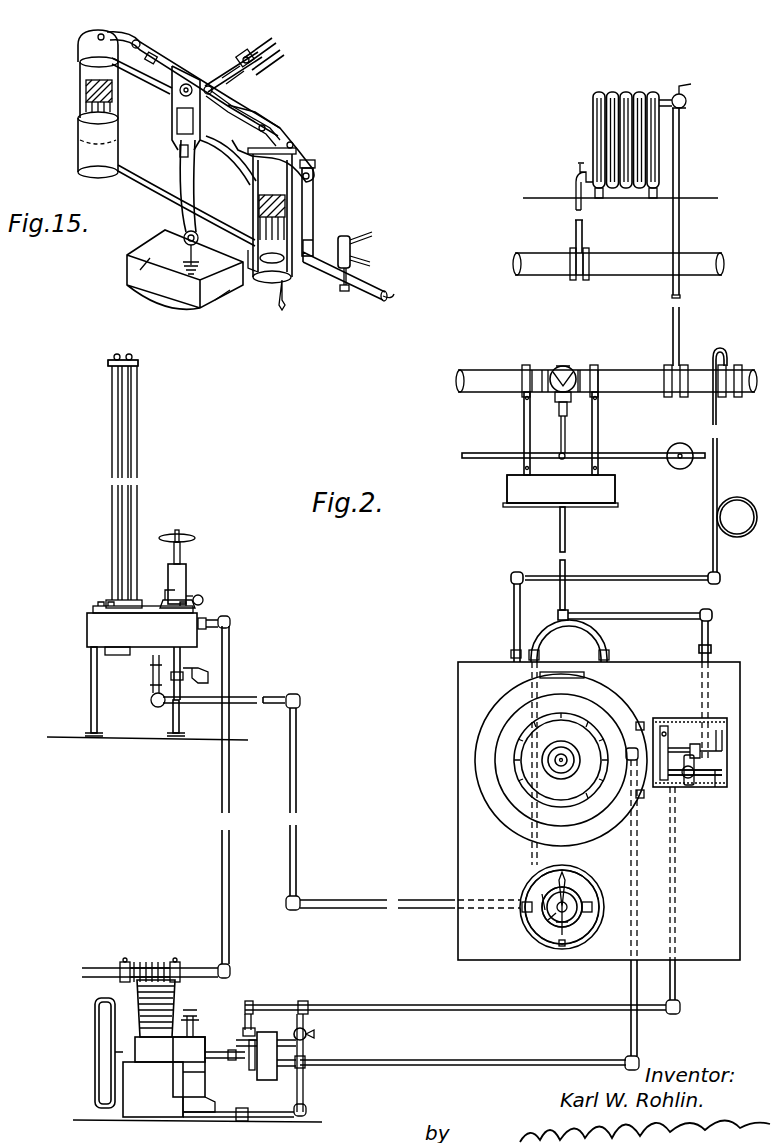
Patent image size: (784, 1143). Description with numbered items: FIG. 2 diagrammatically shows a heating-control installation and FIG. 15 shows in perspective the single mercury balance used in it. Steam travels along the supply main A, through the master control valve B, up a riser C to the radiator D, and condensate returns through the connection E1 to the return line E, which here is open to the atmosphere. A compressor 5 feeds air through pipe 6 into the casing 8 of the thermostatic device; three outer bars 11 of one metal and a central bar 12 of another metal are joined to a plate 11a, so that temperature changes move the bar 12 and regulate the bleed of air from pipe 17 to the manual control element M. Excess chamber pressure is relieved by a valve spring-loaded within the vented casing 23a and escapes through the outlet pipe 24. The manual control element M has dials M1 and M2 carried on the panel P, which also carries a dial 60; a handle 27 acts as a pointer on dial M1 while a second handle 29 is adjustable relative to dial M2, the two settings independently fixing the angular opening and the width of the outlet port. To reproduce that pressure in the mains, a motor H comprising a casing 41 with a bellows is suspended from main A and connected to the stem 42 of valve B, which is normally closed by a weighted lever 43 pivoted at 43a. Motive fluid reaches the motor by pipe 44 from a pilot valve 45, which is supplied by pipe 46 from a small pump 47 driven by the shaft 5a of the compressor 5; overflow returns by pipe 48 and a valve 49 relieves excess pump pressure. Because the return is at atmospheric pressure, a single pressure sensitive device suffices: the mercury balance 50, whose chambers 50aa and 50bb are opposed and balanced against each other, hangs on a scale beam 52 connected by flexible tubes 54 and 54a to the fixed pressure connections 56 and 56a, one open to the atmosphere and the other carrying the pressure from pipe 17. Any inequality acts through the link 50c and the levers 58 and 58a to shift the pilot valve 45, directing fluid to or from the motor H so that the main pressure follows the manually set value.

In FIG. 2, the radiator D is at (593, 102).
In FIG. 2, the return line E is at (618, 264).
In FIG. 2, the connection E1 is at (583, 227).
In FIG. 2, the riser C is at (679, 314).
In FIG. 2, the supply main A is at (606, 381).
In FIG. 2, the master control valve B is at (565, 366).
In FIG. 2, the stem 42 is at (525, 396).
In FIG. 2, the weighted lever 43 is at (655, 456).
In FIG. 2, the pivot connection 43a is at (558, 456).
In FIG. 2, the casing 41 is at (560, 491).
In FIG. 2, the motor H is at (547, 489).
In FIG. 2, the pipe 44 is at (566, 544).
In FIG. 15, the fixed pressure connection 56 is at (256, 41).
In FIG. 2, the fixed pressure connection 56 is at (514, 635).
In FIG. 15, the fixed pressure connection 56a is at (270, 56).
In FIG. 2, the fixed pressure connection 56a is at (610, 662).
In FIG. 2, the panel P is at (599, 811).
In FIG. 2, the indicator dial 60 is at (514, 703).
In FIG. 15, the connecting link 50c is at (313, 207).
In FIG. 2, the connecting link 50c is at (683, 722).
In FIG. 15, the pilot valve 45 is at (340, 265).
In FIG. 2, the pilot valve 45 is at (690, 790).
In FIG. 15, the lever 58 is at (360, 288).
In FIG. 2, the lever 58 is at (668, 790).
In FIG. 15, the lever 58a is at (382, 294).
In FIG. 2, the lever 58a is at (715, 790).
In FIG. 2, the manual control element M is at (585, 920).
In FIG. 2, the dial M1 is at (592, 905).
In FIG. 2, the dial M2 is at (590, 890).
In FIG. 2, the operating handle 27 is at (542, 897).
In FIG. 2, the second handle 29 is at (548, 922).
In FIG. 2, the pipe 48 is at (638, 869).
In FIG. 2, the pipe 46 is at (677, 881).
In FIG. 2, the small pump 47 is at (268, 1032).
In FIG. 2, the valve 49 is at (312, 1036).
In FIG. 2, the compressor 5 is at (197, 1040).
In FIG. 2, the shaft 5a is at (224, 1056).
In FIG. 2, the pipe 6 is at (222, 868).
In FIG. 2, the pipe 17 is at (296, 786).
In FIG. 2, the outlet pipe 24 is at (203, 677).
In FIG. 2, the casing 8 is at (147, 671).
In FIG. 2, the bars 11 is at (138, 452).
In FIG. 2, the plate 11a is at (110, 362).
In FIG. 2, the bar 12 is at (126, 514).
In FIG. 2, the vented casing 23a is at (183, 596).
In FIG. 15, the chamber 50aa is at (80, 84).
In FIG. 15, the scale beam 52 is at (168, 97).
In FIG. 15, the flexible tube 54 is at (222, 78).
In FIG. 15, the flexible tube 54a is at (238, 72).
In FIG. 15, the mercury balance 50 is at (185, 258).
In FIG. 15, the chamber 50bb is at (256, 201).